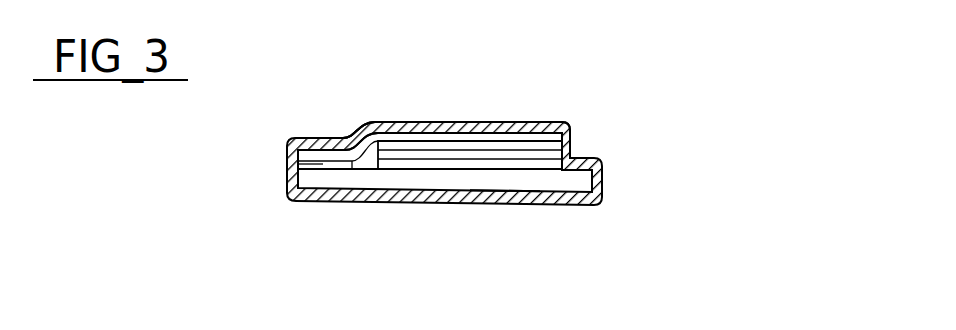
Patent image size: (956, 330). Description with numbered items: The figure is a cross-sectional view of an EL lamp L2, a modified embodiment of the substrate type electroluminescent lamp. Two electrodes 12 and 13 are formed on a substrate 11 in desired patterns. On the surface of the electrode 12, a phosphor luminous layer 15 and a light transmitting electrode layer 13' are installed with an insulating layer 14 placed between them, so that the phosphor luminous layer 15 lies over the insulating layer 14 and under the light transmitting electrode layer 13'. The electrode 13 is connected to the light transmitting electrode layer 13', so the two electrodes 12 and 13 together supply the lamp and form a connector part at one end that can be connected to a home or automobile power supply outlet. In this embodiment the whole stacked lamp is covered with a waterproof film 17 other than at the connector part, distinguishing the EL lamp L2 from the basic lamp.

The substrate 11 is at (504, 184).
The electrode 12 is at (551, 166).
The electrode 13 is at (255, 180).
The light transmitting electrode layer 13' is at (627, 128).
The insulating layer 14 is at (568, 170).
The phosphor luminous layer 15 is at (567, 144).
The waterproof film 17 is at (492, 122).
The EL lamp L2 is at (401, 111).